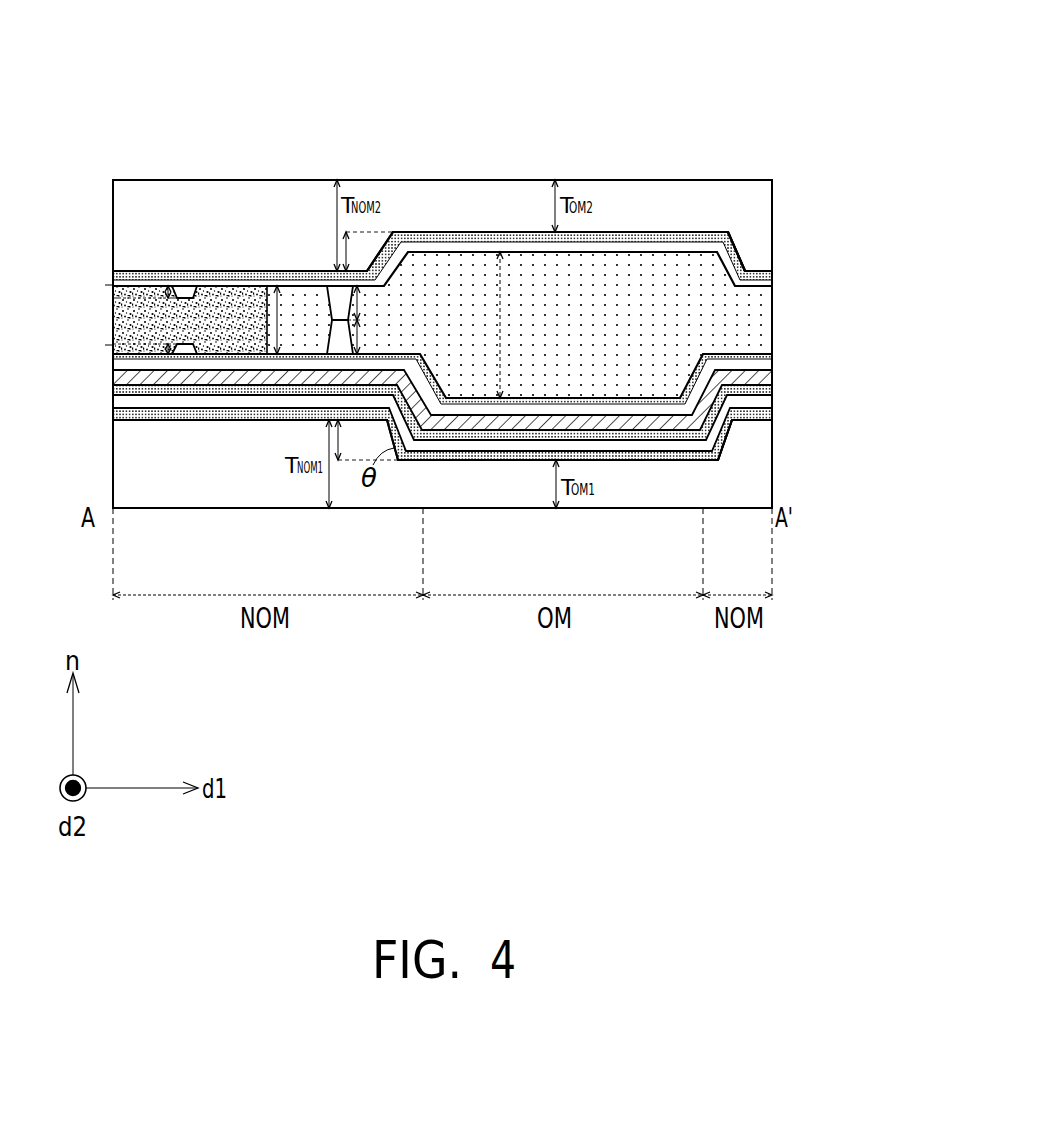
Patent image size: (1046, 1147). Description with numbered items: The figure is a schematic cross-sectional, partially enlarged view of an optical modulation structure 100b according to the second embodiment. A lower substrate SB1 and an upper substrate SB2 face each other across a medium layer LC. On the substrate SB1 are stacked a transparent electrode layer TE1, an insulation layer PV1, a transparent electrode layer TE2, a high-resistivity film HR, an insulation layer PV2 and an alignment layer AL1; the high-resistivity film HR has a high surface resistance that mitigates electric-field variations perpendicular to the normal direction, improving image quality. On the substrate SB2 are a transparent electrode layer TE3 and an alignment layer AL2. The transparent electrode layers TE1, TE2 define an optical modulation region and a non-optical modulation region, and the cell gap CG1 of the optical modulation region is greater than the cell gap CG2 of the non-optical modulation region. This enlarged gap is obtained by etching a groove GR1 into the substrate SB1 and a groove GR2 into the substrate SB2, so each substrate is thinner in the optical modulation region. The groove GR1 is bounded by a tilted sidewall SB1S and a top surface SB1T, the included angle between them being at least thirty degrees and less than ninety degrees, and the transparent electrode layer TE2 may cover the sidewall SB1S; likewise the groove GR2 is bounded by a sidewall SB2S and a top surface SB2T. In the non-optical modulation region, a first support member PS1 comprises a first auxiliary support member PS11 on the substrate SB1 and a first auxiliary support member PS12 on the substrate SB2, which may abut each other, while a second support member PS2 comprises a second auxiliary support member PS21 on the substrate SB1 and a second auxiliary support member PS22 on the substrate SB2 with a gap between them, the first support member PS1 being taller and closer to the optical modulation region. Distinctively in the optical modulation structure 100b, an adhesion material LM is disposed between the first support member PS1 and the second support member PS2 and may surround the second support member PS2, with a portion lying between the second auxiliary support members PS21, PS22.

The substrate SB2 is at (755, 209).
The transparent electrode layer TE3 is at (758, 276).
The alignment layer AL2 is at (758, 288).
The medium layer LC is at (760, 318).
The alignment layer AL1 is at (765, 356).
The insulation layer PV2 is at (760, 366).
The high-resistivity film HR is at (773, 380).
The transparent electrode layer TE2 is at (773, 391).
The insulation layer PV1 is at (773, 402).
The transparent electrode layer TE1 is at (773, 413).
The substrate SB1 is at (763, 483).
The top surface SB1T is at (481, 445).
The top surface SB2T is at (637, 238).
The sidewall SB2S is at (728, 265).
The sidewall SB1S is at (725, 436).
The groove GR1 is at (600, 372).
The groove GR2 is at (455, 280).
The adhesion material LM is at (113, 325).
The cell gap CG1 is at (521, 325).
The cell gap CG2 is at (297, 320).
The first support member PS1 is at (277, 184).
The first auxiliary support member PS11 is at (338, 338).
The first auxiliary support member PS12 is at (333, 297).
The second support member PS2 is at (121, 224).
The second auxiliary support member PS21 is at (193, 344).
The second auxiliary support member PS22 is at (187, 285).
The optical modulation structure 100b is at (860, 710).